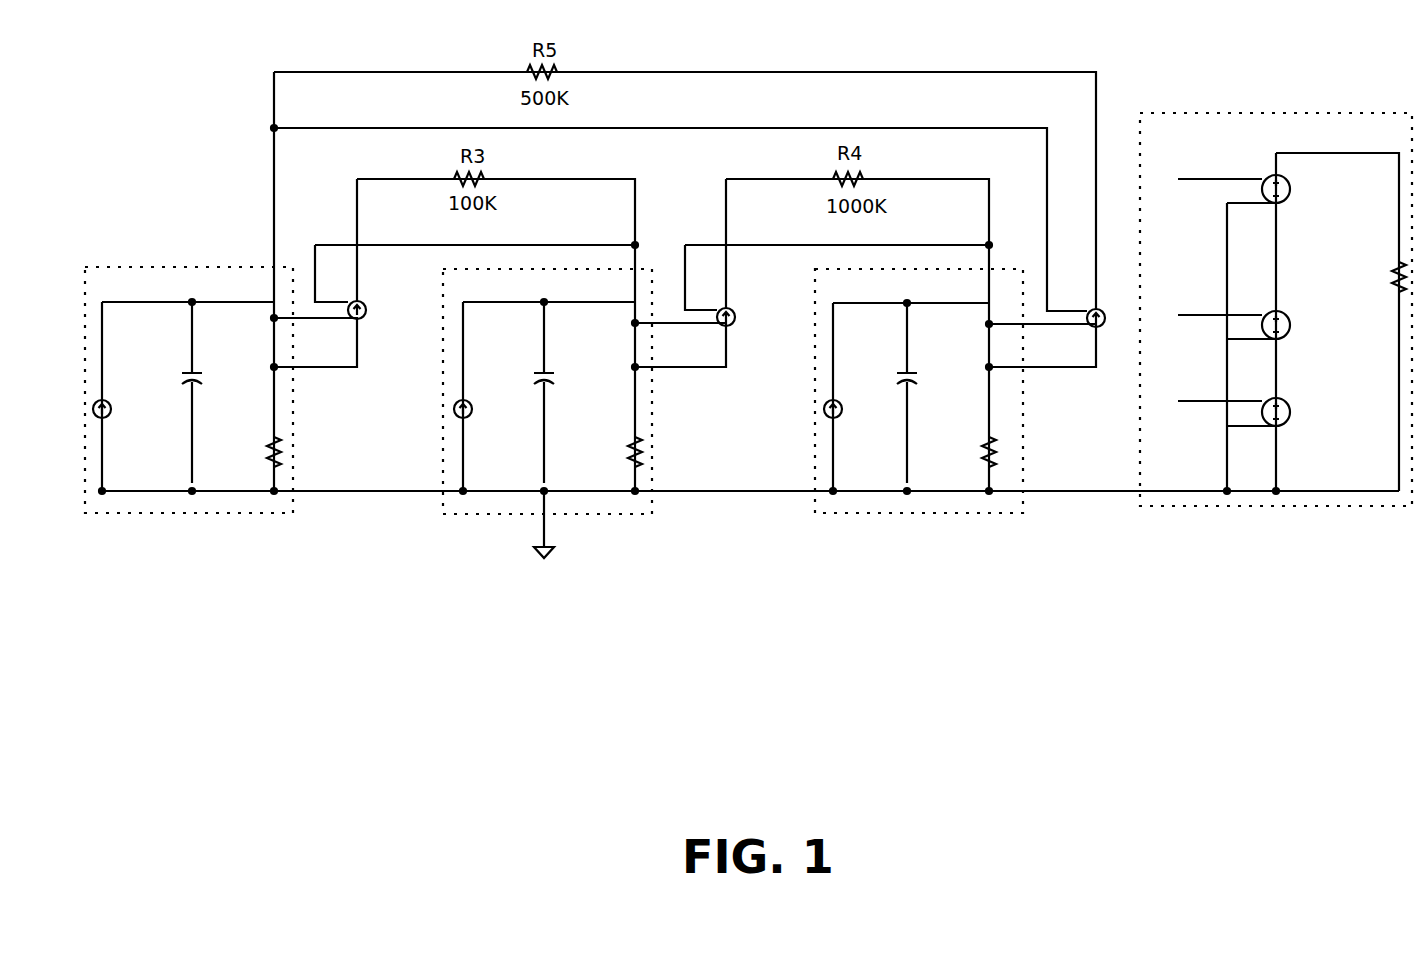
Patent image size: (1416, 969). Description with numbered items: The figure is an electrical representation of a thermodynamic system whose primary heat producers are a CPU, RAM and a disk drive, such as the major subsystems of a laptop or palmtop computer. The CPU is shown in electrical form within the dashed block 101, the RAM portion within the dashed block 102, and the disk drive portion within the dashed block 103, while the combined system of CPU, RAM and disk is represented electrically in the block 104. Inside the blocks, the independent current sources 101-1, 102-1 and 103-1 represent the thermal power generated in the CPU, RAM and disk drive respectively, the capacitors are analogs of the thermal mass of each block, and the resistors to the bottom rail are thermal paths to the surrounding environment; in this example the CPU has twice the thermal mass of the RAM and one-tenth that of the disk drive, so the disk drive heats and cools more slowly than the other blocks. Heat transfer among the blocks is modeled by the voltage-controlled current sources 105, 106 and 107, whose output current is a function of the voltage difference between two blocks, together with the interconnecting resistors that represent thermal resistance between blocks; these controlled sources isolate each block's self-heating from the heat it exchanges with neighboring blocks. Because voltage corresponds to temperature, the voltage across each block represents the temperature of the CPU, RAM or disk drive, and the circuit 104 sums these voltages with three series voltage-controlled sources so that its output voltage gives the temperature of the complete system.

The CPU block 101 is at (307, 509).
The independent current source I_CPU 101-1 is at (111, 412).
The RAM block 102 is at (663, 509).
The independent current source I_RAM 102-1 is at (472, 412).
The DISK block 103 is at (1035, 509).
The independent current source I_DISK 103-1 is at (842, 412).
The combined system circuit 104 is at (1128, 509).
The voltage-controlled current source 105 is at (374, 311).
The voltage-controlled current source 106 is at (744, 311).
The voltage-controlled current source 107 is at (1080, 320).